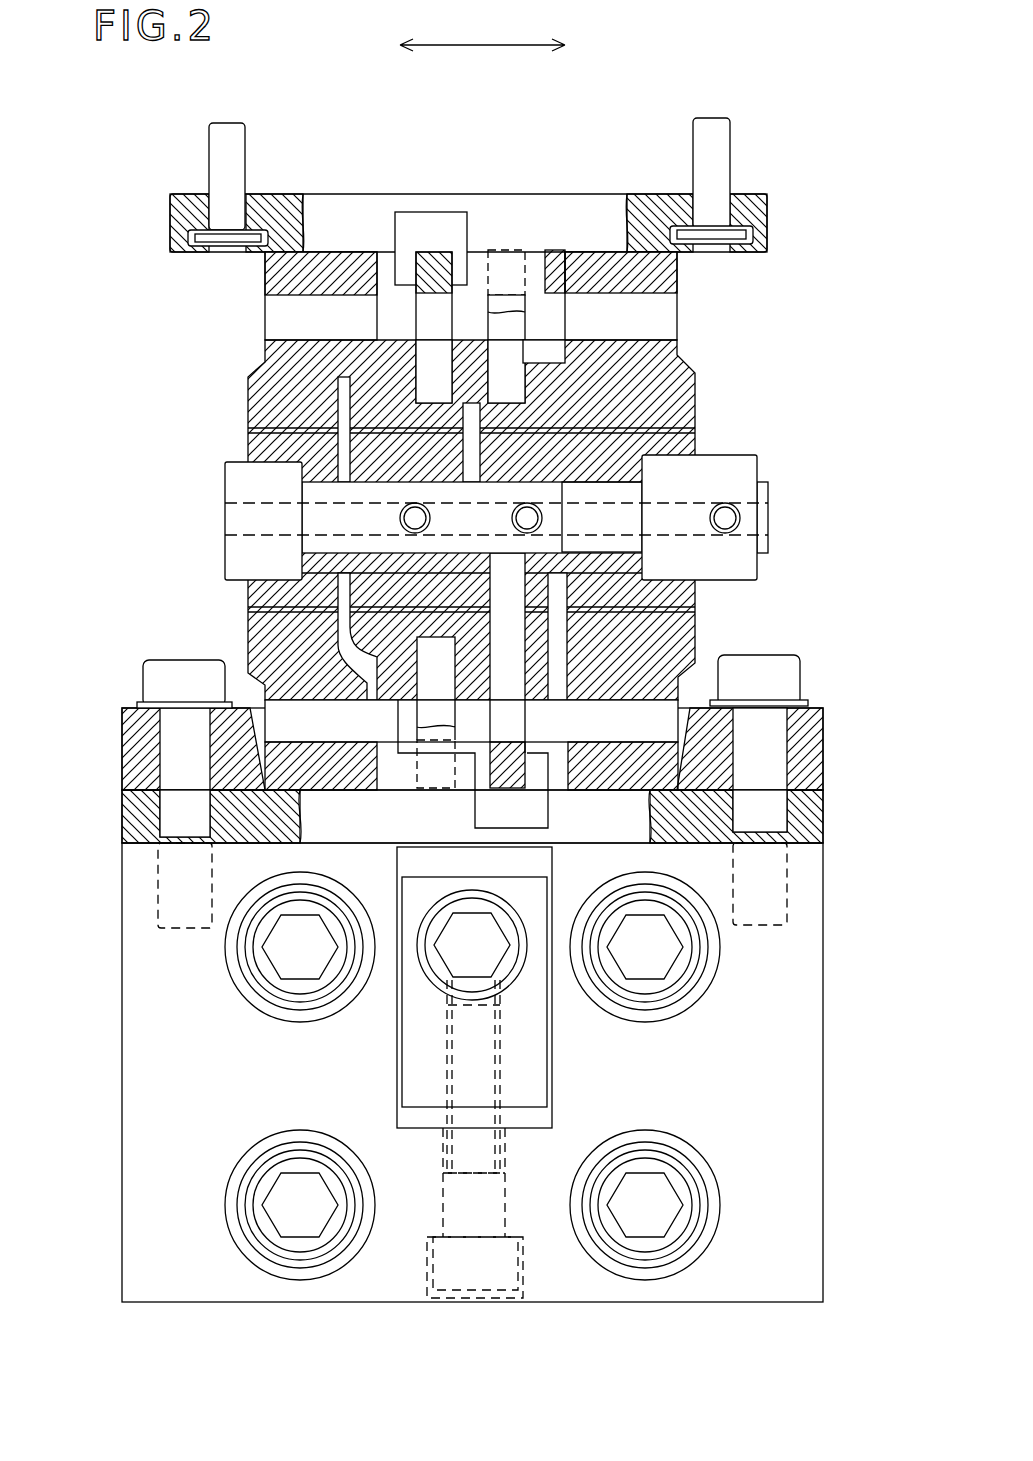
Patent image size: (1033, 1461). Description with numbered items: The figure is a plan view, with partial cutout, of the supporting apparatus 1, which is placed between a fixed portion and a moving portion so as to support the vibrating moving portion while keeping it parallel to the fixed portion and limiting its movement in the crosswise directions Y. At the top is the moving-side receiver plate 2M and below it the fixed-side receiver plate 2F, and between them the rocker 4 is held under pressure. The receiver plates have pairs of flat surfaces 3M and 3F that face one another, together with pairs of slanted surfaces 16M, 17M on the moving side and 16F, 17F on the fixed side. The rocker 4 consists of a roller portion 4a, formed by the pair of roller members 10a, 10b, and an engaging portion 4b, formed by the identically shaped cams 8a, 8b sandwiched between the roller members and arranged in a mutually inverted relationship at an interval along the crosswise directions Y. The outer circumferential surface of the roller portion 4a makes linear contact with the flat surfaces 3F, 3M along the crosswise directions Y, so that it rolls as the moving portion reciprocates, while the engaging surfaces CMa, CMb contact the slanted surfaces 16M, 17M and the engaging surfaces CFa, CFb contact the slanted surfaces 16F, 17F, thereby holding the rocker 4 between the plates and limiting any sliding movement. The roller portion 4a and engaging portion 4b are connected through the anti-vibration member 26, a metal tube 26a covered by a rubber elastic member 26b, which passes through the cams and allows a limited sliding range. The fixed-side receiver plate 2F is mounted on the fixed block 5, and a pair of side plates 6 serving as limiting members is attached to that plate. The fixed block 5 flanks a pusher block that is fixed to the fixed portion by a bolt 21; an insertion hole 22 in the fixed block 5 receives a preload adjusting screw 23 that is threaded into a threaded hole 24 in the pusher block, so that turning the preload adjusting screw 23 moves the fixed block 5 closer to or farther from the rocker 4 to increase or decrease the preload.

The supporting apparatus 1 is at (188, 183).
The moving-side receiver plate 2M is at (180, 224).
The flat surface 3M is at (370, 254).
The slanted surface 16M is at (403, 210).
The engaging surface CMb is at (420, 258).
The engaging surface CMa is at (527, 248).
The slanted surface 17M is at (560, 295).
The rocker 4 is at (688, 354).
The roller portion 4a is at (175, 378).
The roller member 10a is at (400, 363).
The roller member 10b is at (278, 417).
The engaging portion 4b is at (770, 378).
The engaging member (cam) 8a is at (585, 352).
The engaging member (cam) 8b is at (545, 385).
The anti-vibration member 26 is at (568, 514).
The metal tube 26a is at (550, 563).
The elastic member 26b is at (570, 448).
The slanted surface 17F is at (388, 787).
The flat surface 3F is at (410, 755).
The side plate 6 is at (135, 750).
The fixed-side receiver plate 2F is at (135, 826).
The engaging surface CFb is at (441, 790).
The slanted surface 16F is at (540, 810).
The fixed block 5 is at (140, 1078).
The bolt 21 is at (432, 962).
The engaging surface CFa is at (548, 810).
The threaded hole 24 is at (495, 1047).
The preload adjusting screw 23 is at (458, 1267).
The insertion hole 22 is at (507, 1185).
The crosswise directions Y is at (482, 29).